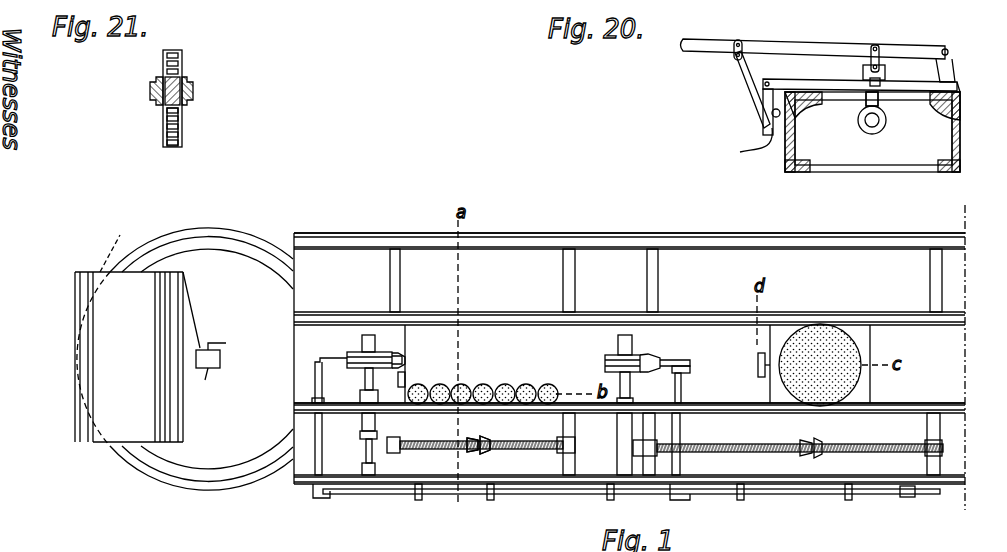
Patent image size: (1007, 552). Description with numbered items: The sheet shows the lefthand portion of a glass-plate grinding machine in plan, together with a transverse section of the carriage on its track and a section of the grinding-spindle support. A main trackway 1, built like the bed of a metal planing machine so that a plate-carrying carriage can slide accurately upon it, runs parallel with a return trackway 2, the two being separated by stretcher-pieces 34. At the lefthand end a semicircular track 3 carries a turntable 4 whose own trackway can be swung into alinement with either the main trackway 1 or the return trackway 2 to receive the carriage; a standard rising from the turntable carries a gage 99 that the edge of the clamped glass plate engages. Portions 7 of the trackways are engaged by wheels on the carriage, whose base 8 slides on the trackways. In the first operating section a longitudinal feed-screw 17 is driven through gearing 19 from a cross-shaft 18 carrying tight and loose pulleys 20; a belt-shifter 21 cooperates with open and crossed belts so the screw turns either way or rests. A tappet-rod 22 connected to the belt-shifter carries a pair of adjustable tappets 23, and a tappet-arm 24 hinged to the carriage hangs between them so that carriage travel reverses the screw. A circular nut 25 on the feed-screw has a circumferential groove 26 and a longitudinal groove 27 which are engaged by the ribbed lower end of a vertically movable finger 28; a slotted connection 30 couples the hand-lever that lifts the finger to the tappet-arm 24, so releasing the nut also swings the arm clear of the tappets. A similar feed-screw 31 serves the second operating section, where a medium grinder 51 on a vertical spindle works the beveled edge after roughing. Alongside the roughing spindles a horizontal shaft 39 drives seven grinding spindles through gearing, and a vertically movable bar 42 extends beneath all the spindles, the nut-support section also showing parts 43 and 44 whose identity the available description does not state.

In FIG. 20, the main trackway 1 is at (962, 150).
In FIG. 1, the main trackway 1 is at (472, 408).
In FIG. 1, the return trackway 2 is at (515, 258).
In FIG. 1, the semicircular track 3 is at (185, 468).
In FIG. 1, the turntable 4 is at (106, 270).
In FIG. 1, the trackway portions 7 is at (720, 240).
In FIG. 20, the carriage base 8 is at (958, 86).
In FIG. 20, the longitudinal feed-screw 17 is at (886, 124).
In FIG. 1, the longitudinal feed-screw 17 is at (420, 446).
In FIG. 1, the cross-shaft 18 is at (366, 391).
In FIG. 1, the gearing 19 is at (363, 441).
In FIG. 1, the tight and loose pulleys 20 is at (386, 355).
In FIG. 1, the belt-shifter 21 is at (404, 360).
In FIG. 20, the tappet-rod 22 is at (740, 152).
In FIG. 1, the tappet-rod 22 is at (520, 496).
In FIG. 1, the tappets 23 is at (418, 500).
In FIG. 20, the tappet-arm 24 is at (790, 36).
In FIG. 20, the circular nut 25 is at (868, 130).
In FIG. 1, the circular nut 25 is at (492, 452).
In FIG. 1, the circumferential groove 26 is at (484, 440).
In FIG. 1, the longitudinal groove 27 is at (468, 451).
In FIG. 20, the finger 28 is at (862, 103).
In FIG. 20, the slotted connection 30 is at (735, 60).
In FIG. 1, the feed-screw 31 is at (868, 445).
In FIG. 1, the stretcher-pieces 34 is at (542, 358).
In FIG. 1, the horizontal shaft 39 is at (441, 389).
In FIG. 21, the vertically movable bar 42 is at (186, 104).
In FIG. 21, the toothed portion 43 is at (166, 131).
In FIG. 21, the gear hub 44 is at (150, 89).
In FIG. 1, the medium grinder 51 is at (818, 342).
In FIG. 1, the gage 99 is at (192, 551).